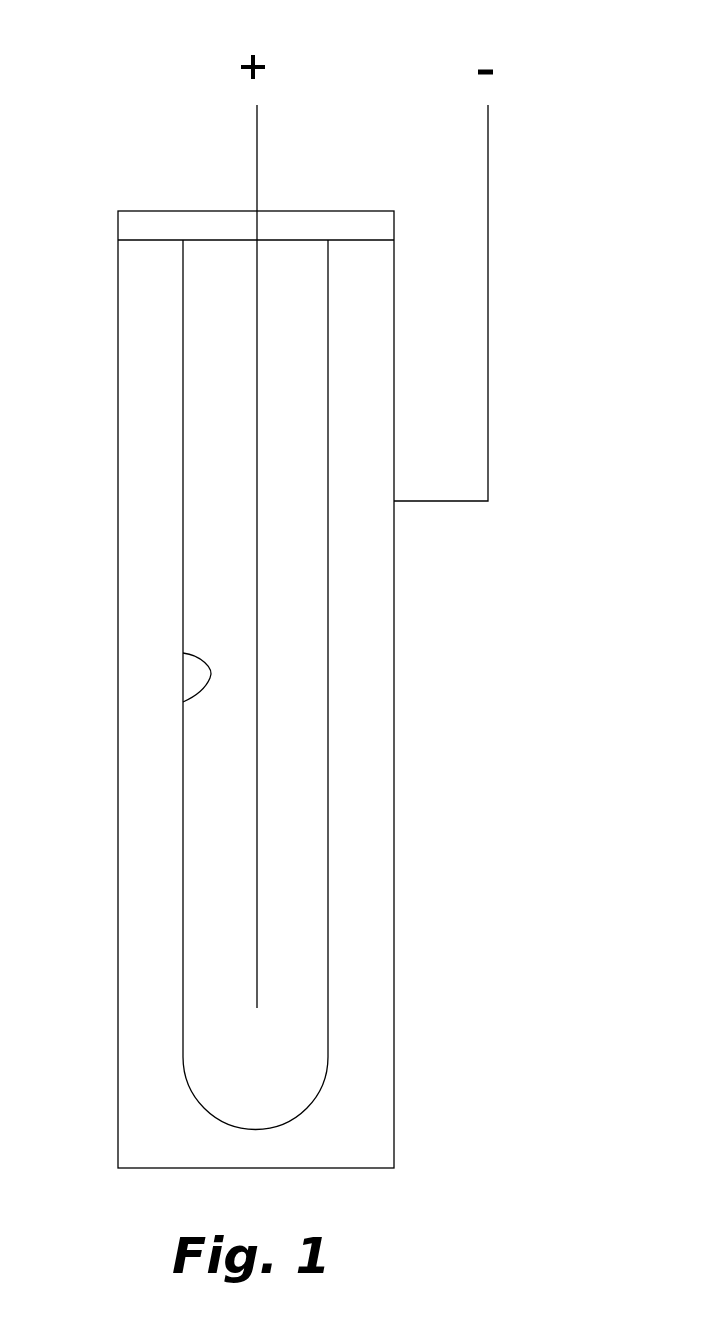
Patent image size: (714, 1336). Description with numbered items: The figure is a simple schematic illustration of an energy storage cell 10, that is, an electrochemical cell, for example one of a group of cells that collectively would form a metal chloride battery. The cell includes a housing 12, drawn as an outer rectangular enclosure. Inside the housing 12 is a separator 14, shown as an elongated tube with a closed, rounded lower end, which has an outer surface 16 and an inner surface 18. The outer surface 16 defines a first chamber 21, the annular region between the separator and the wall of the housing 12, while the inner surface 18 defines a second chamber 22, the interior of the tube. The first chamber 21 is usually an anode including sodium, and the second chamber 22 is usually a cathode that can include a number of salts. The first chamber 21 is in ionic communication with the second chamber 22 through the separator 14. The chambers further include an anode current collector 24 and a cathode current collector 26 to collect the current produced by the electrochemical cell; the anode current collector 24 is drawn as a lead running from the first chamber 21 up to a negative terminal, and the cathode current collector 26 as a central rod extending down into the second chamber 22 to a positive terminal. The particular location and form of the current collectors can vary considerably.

The energy storage cell 10 is at (314, 590).
The housing 12 is at (118, 375).
The separator 14 is at (185, 1082).
The outer surface 16 is at (199, 685).
The inner surface 18 is at (183, 702).
The first chamber 21 is at (370, 722).
The second chamber 22 is at (305, 587).
The anode current collector 24 is at (488, 150).
The cathode current collector 26 is at (257, 152).